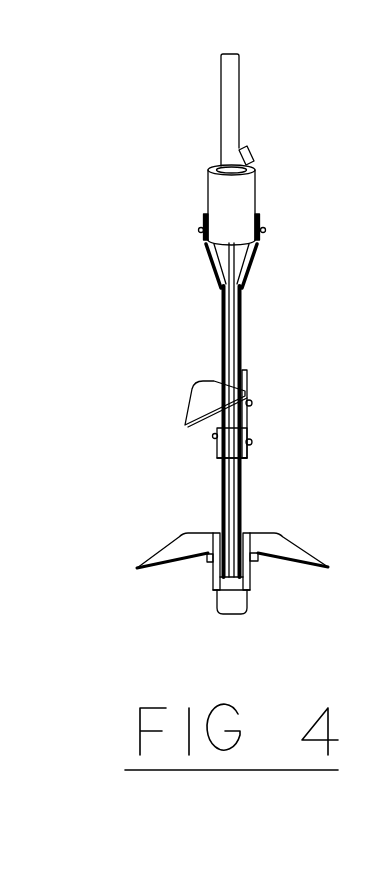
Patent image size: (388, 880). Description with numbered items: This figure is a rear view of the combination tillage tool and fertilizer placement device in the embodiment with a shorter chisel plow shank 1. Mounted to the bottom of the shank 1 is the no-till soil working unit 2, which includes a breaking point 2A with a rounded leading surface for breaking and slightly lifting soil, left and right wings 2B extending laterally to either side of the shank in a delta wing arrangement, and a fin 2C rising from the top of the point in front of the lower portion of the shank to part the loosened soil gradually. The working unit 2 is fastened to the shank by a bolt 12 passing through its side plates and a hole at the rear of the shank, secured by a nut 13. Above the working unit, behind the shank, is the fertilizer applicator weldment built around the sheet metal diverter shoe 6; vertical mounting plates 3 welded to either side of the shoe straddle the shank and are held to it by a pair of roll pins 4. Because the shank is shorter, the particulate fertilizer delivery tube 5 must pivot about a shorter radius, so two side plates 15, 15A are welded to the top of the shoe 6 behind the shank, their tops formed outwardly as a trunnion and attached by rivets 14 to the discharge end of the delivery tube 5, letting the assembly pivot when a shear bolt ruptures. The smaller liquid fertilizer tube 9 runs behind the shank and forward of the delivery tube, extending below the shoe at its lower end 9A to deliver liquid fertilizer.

The chisel plow shank 1 is at (221, 91).
The liquid fertilizer tube 9 is at (250, 158).
The fertilizer delivery tube 5 is at (208, 194).
The rivets 14 is at (199, 231).
The side plate 15 is at (222, 300).
The side plate 15A is at (240, 302).
The fin 2C is at (221, 500).
The diverter plate (shoe) 6 is at (185, 403).
The roll pins 4 is at (252, 442).
The lower end of liquid fertilizer tube 9A is at (213, 434).
The mounting plates 3 is at (215, 460).
The bolt 12 is at (206, 563).
The nut 13 is at (258, 565).
The wings 2B is at (153, 557).
The soil working unit 2 is at (212, 582).
The breaking point 2A is at (229, 614).